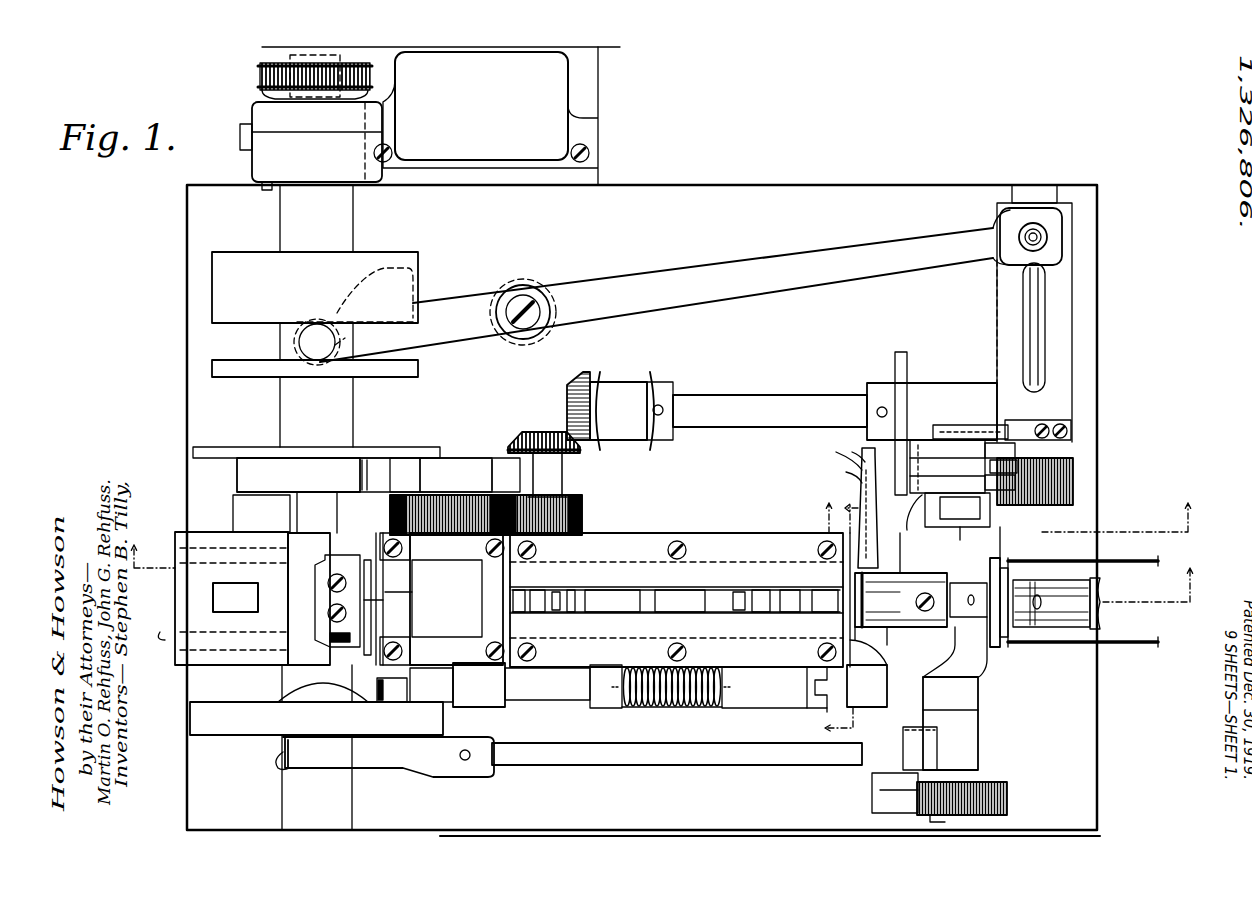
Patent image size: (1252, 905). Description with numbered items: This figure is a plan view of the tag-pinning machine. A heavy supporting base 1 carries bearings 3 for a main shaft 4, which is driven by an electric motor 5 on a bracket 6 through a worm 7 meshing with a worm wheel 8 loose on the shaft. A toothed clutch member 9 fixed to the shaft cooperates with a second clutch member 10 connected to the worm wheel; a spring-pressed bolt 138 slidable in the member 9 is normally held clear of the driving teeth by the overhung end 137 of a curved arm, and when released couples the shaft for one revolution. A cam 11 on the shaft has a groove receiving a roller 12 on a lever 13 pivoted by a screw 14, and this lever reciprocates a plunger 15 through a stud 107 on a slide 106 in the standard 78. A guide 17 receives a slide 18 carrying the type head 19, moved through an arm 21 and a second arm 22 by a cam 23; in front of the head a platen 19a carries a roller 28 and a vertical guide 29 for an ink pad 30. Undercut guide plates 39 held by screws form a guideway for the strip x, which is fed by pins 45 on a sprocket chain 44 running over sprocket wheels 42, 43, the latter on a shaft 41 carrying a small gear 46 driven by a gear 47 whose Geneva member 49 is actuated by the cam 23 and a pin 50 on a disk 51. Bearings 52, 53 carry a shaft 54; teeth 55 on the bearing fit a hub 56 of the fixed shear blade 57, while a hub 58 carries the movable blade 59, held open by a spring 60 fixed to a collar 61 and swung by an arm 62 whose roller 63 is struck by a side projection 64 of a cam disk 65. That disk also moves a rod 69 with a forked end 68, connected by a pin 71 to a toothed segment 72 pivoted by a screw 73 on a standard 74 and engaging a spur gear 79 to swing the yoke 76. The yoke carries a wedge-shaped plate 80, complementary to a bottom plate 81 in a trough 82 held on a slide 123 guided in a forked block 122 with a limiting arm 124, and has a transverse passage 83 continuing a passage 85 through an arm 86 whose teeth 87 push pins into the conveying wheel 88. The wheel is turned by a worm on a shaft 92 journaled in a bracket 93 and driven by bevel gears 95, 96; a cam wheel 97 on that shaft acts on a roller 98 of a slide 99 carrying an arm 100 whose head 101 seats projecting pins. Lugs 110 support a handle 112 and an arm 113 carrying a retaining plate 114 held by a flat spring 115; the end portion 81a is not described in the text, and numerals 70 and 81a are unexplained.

The supporting base 1 is at (775, 185).
The bearings 3 is at (340, 222).
The main shaft 4 is at (280, 388).
The electric motor 5 is at (481, 106).
The bracket 6 is at (598, 125).
The worm 7 is at (288, 95).
The worm wheel 8 is at (260, 73).
The clutch member 9 is at (255, 167).
The clutch member 10 is at (254, 108).
The cam 11 is at (418, 262).
The roller 12 is at (312, 326).
The lever 13 is at (605, 279).
The screw 14 is at (522, 294).
The plunger 15 is at (1045, 310).
The guide 17 is at (158, 648).
The slide 18 is at (223, 598).
The type carrying head 19 is at (309, 599).
The strip guiding structure 19a is at (410, 548).
The arm 21 is at (235, 597).
The arm 22 is at (233, 512).
The cam 23 is at (237, 473).
The roller 28 is at (478, 595).
The vertical guide 29 is at (368, 558).
The pad 30 is at (385, 610).
The guide plates 39 is at (740, 533).
The shaft 41 is at (562, 465).
The sprocket wheel 42 is at (778, 612).
The sprocket wheel 43 is at (521, 612).
The sprocket chain 44 is at (605, 595).
The pins 45 is at (557, 597).
The gear 46 is at (582, 505).
The gear 47 is at (455, 500).
The Geneva gear member 49 is at (450, 465).
The pin 50 is at (403, 470).
The disk 51 is at (222, 447).
The bearing 52 is at (488, 705).
The bearing 53 is at (776, 700).
The shaft 54 is at (555, 693).
The teeth 55 is at (815, 688).
The hub 56 is at (816, 707).
The shear blade 57 is at (837, 600).
The hub 58 is at (867, 686).
The shear blade 59 is at (862, 632).
The spring 60 is at (678, 704).
The collar 61 is at (604, 700).
The arm 62 is at (431, 685).
The roller 63 is at (378, 684).
The side projection 64 is at (298, 690).
The cam disk 65 is at (215, 718).
The forked end 68 is at (372, 757).
The rod 69 is at (638, 755).
The hook 70 is at (276, 760).
The pin 71 is at (905, 727).
The toothed segment 72 is at (1007, 800).
The screw 73 is at (872, 808).
The bracket or standard 74 is at (965, 730).
The oscillatory yoke 76 is at (925, 602).
The bracket or standard 78 is at (1072, 292).
The spur gear 79 is at (940, 819).
The plate 80 is at (892, 573).
The plate 81 is at (1050, 580).
The ring 81a is at (1100, 590).
The trough 82 is at (1115, 643).
The pin-receiving passage 83 is at (868, 583).
The guiding passage 85 is at (872, 530).
The arm 86 is at (836, 455).
The teeth 87 is at (852, 448).
The conveying wheel 88 is at (1073, 492).
The shaft 92 is at (795, 397).
The bracket 93 is at (622, 382).
The beveled gear 95 is at (531, 432).
The beveled gear 96 is at (575, 378).
The cam wheel 97 is at (900, 352).
The roller 98 is at (842, 471).
The slide 99 is at (907, 513).
The arm 100 is at (968, 532).
The head 101 is at (990, 520).
The slide 106 is at (1062, 268).
The stud 107 is at (1047, 237).
The lugs 110 is at (986, 467).
The arm 112 is at (985, 426).
The arm 113 is at (956, 466).
The retaining plate 114 is at (1003, 474).
The flat spring 115 is at (1020, 422).
The forked block 122 is at (995, 647).
The slide 123 is at (1010, 637).
The arm 124 is at (968, 617).
The overhung end 137 is at (240, 130).
The bolt 138 is at (265, 191).
The strip x is at (409, 592).